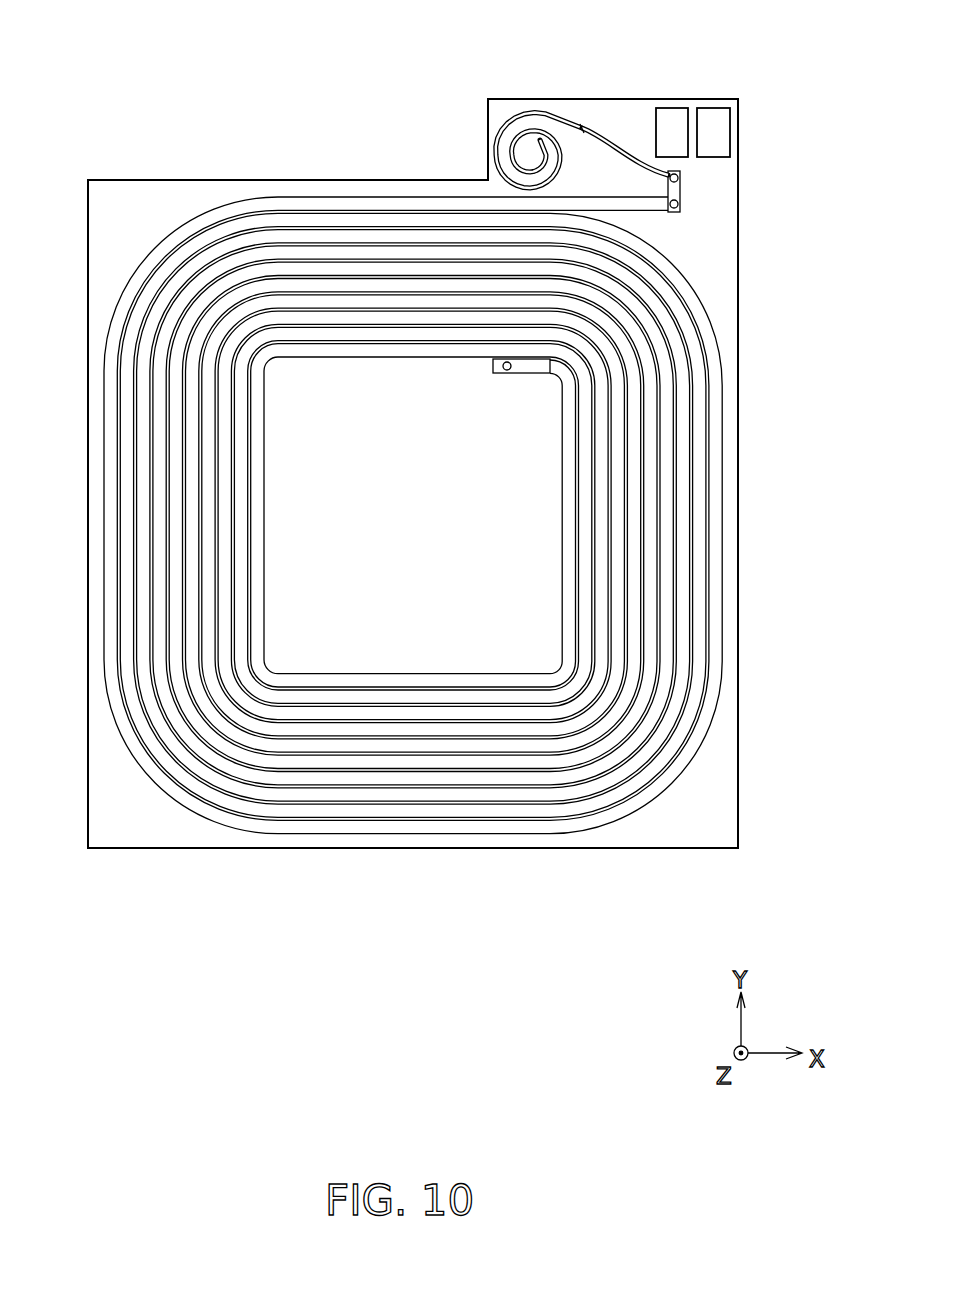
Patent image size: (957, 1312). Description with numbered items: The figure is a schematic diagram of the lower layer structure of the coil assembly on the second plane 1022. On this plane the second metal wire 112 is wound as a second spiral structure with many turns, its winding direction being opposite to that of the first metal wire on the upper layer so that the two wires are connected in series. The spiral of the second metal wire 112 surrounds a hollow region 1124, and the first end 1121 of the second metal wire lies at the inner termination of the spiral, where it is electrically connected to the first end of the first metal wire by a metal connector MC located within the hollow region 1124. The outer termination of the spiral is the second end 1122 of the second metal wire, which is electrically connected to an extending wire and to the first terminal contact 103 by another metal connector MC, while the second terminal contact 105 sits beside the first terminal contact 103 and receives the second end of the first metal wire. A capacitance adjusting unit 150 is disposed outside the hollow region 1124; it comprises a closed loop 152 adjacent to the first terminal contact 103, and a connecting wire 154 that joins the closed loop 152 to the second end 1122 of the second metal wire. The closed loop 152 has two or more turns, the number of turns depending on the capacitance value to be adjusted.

The second plane 1022 is at (724, 745).
The second metal wire 112 is at (738, 523).
The first end of the second metal wire 1121 is at (528, 372).
The second end of the second metal wire 1122 is at (682, 192).
The hollow region 1124 is at (329, 658).
The capacitance adjusting unit 150 is at (577, 95).
The closed loop 152 is at (532, 113).
The connecting wire 154 is at (612, 139).
The metal connector MC is at (660, 172).
The first terminal contact 103 is at (670, 116).
The second terminal contact 105 is at (712, 116).